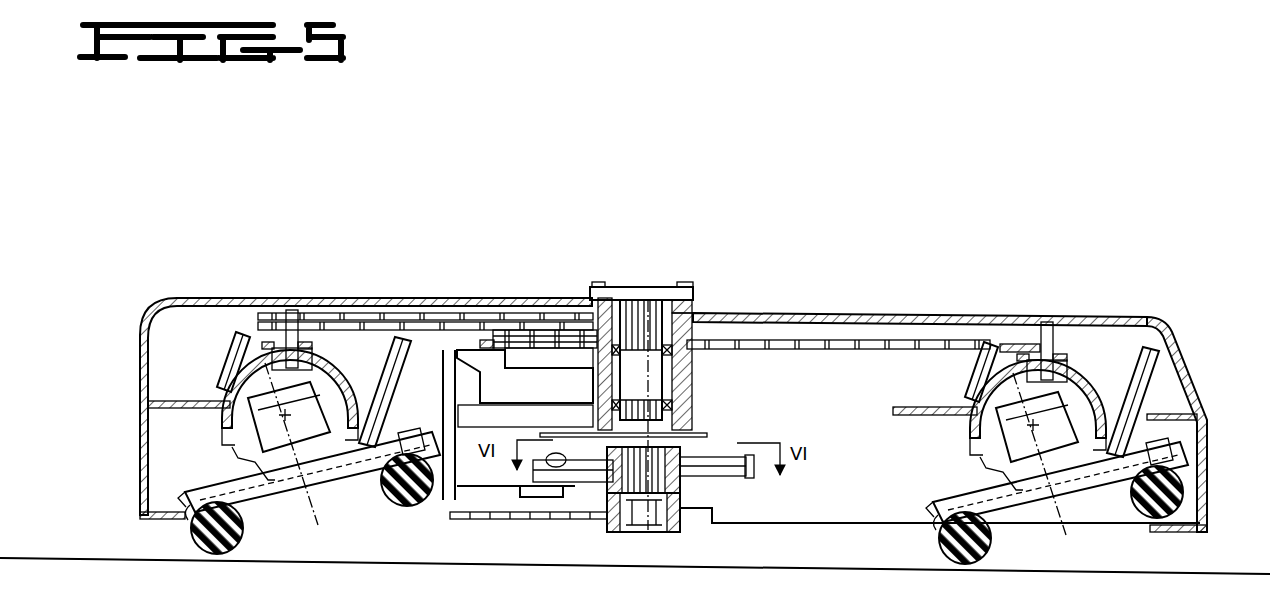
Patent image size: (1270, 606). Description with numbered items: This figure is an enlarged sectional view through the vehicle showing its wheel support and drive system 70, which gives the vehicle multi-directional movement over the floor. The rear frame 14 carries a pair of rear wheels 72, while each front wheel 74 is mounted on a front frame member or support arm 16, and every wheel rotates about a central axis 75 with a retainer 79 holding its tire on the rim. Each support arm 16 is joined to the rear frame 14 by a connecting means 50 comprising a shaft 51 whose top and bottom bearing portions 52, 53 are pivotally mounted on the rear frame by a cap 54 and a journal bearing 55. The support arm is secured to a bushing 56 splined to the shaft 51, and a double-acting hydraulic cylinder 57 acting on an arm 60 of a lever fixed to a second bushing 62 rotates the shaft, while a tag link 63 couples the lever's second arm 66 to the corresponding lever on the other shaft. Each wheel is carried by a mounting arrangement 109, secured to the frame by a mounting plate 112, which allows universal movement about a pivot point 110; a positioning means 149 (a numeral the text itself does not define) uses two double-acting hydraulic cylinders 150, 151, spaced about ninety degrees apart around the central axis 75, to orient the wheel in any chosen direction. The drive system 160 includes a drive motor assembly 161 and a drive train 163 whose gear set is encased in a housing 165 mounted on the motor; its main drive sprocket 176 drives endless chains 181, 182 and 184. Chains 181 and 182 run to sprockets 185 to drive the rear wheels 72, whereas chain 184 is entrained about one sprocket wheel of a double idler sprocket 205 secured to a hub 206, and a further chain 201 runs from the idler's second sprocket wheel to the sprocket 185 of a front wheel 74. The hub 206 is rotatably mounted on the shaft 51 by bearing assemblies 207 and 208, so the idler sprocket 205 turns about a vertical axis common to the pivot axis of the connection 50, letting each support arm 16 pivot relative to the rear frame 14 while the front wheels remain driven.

The rear frame 14 is at (178, 293).
The front frame member or support arm 16 is at (1147, 320).
The connecting means 50 is at (701, 365).
The shaft 51 is at (662, 437).
The top bearing portion 52 is at (652, 297).
The bottom bearing portion 53 is at (640, 510).
The cap 54 is at (662, 292).
The journal bearing 55 is at (682, 516).
The bushing 56 is at (687, 310).
The double-acting hydraulic cylinder 57 is at (587, 487).
The arm 60 is at (547, 477).
The second bushing 62 is at (678, 478).
The tag link 63 is at (720, 460).
The second arm 66 is at (730, 473).
The wheel support and drive system 70 is at (419, 535).
The rear wheel 72 is at (180, 537).
The front wheel 74 is at (928, 545).
The central axis 75 is at (327, 512).
The retainer 79 is at (1185, 457).
The mounting arrangement 109 is at (220, 364).
The pivot point 110 is at (229, 447).
The mounting plate 112 is at (923, 413).
The mounting pad 149 is at (1011, 348).
The double-acting hydraulic cylinder 150 is at (404, 347).
The double-acting hydraulic cylinder 151 is at (237, 341).
The drive system 160 is at (681, 266).
The drive motor assembly 161 is at (356, 338).
The drive train 163 is at (560, 300).
The housing 165 is at (560, 396).
The main drive sprocket 176 is at (497, 349).
The endless chain 181 is at (381, 317).
The endless chain 182 is at (332, 307).
The endless chain 184 is at (526, 330).
The sprocket 185 is at (291, 312).
The chain 201 is at (836, 332).
The double idler sprocket 205 is at (718, 320).
The hub 206 is at (694, 386).
The bearing assembly 207 is at (590, 362).
The bearing assembly 208 is at (593, 405).